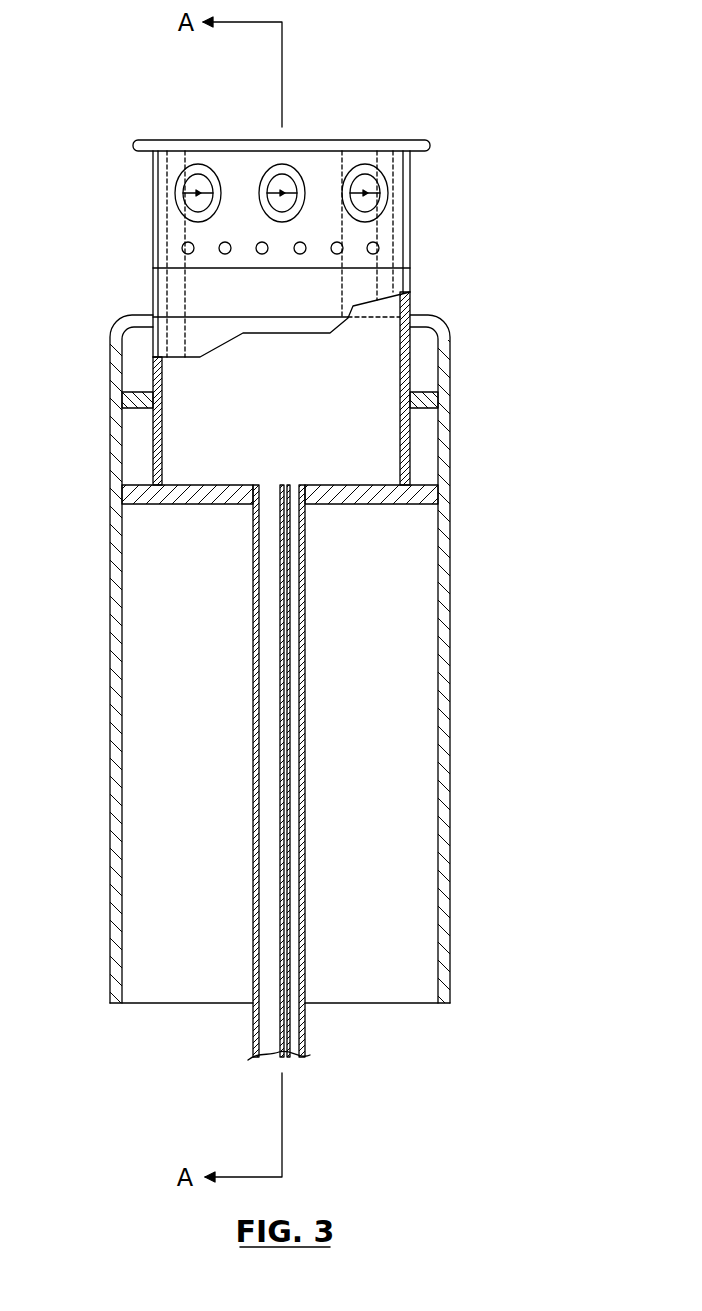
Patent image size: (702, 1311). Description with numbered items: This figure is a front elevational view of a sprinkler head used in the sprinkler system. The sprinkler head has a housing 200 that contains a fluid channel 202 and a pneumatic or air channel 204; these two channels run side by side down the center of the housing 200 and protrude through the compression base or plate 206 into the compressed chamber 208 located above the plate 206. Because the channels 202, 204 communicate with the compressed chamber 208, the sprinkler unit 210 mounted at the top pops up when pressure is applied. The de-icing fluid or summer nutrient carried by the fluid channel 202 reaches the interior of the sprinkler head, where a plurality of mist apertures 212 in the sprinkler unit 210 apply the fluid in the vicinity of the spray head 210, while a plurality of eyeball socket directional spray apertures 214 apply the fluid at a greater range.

The housing 200 is at (450, 622).
The fluid channel 202 is at (265, 567).
The pneumatic or air channel 204 is at (293, 565).
The compression base or plate 206 is at (420, 488).
The compressed chamber 208 is at (300, 407).
The sprinkler unit 210 is at (410, 175).
The mist apertures 212 is at (182, 247).
The eyeball socket directional spray apertures 214 is at (193, 164).